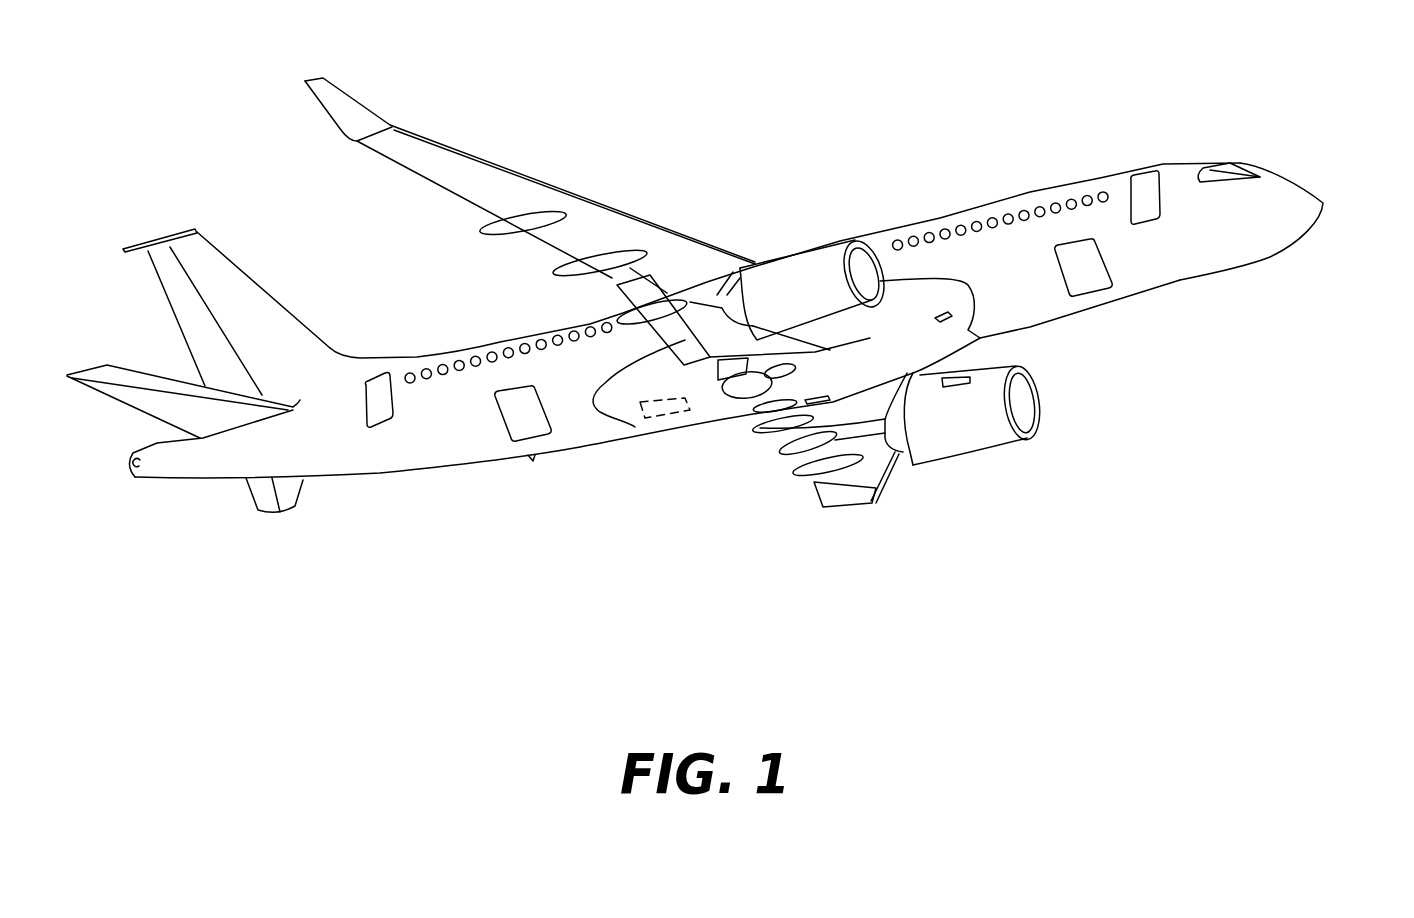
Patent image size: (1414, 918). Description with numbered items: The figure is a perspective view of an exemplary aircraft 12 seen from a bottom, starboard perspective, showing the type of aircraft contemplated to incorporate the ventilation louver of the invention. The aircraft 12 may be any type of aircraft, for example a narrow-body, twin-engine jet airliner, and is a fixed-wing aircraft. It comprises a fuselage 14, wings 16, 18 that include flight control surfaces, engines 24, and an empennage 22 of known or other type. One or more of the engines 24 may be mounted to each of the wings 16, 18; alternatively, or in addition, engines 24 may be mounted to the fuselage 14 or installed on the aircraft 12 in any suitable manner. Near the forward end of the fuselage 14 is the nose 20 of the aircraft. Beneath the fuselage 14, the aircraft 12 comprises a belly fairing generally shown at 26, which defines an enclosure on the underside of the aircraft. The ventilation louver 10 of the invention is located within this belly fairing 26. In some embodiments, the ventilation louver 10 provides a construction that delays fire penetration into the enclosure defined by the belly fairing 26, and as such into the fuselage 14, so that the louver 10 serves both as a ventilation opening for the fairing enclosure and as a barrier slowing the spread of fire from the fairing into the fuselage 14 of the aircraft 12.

The ventilation louver 10 is at (654, 424).
The aircraft 12 is at (736, 346).
The fuselage 14 is at (938, 219).
The wing 16 is at (852, 497).
The wing 18 is at (470, 148).
The nose 20 is at (1312, 206).
The empennage 22 is at (267, 302).
The engines 24 is at (802, 258).
The belly fairing 26 is at (708, 418).